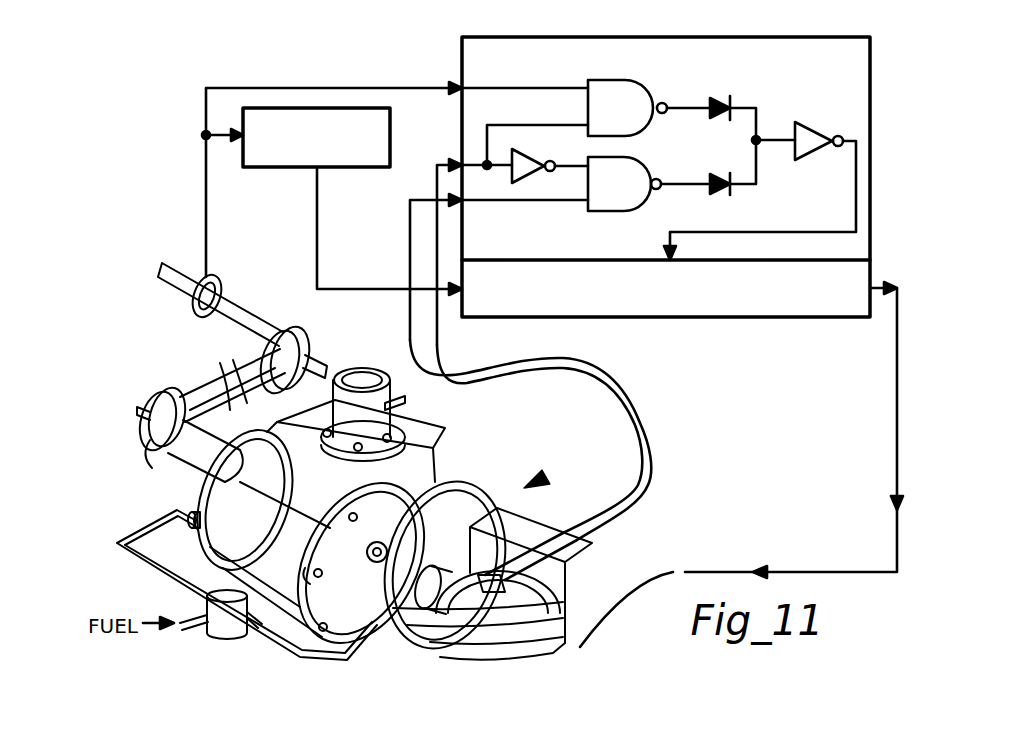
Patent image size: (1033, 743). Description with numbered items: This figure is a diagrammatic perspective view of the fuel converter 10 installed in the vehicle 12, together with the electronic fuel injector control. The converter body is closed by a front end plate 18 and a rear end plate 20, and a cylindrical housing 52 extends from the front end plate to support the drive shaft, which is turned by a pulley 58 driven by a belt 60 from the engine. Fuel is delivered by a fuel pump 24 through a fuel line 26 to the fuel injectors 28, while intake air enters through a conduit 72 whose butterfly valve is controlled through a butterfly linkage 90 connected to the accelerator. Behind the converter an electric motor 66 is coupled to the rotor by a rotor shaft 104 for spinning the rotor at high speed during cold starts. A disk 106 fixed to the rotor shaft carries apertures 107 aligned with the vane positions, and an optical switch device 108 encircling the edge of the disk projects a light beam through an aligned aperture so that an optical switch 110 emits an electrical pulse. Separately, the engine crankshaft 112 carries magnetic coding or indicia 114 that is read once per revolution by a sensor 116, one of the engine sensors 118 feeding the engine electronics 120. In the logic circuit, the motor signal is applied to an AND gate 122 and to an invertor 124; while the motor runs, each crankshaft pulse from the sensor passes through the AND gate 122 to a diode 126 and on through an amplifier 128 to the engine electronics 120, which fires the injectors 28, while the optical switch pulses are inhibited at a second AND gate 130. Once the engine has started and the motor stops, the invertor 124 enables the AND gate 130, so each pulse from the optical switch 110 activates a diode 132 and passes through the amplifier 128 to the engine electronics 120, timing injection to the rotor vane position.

The fuel converter 10 is at (150, 480).
The vehicle 12 is at (450, 493).
The front end plate 18 is at (200, 548).
The rear end plate 20 is at (365, 507).
The fuel pump 24 is at (207, 600).
The fuel line 26 is at (150, 519).
The fuel injectors 28 is at (200, 520).
The cylindrical housing 52 is at (210, 448).
The pulley 58 is at (160, 460).
The belt 60 is at (303, 327).
The electric motor 66 is at (567, 560).
The conduit 72 is at (392, 418).
The butterfly linkage 90 is at (392, 405).
The rotor shaft 104 is at (433, 487).
The disk 106 is at (565, 590).
The apertures 107 is at (487, 543).
The optical switch device 108 is at (573, 640).
The optical switch 110 is at (537, 479).
The engine crankshaft 112 is at (160, 288).
The magnetic coding or indicia 114 is at (197, 313).
The sensor 116 is at (216, 275).
The engine sensors 118 is at (297, 167).
The engine electronics 120 is at (790, 305).
The AND gate 122 is at (640, 124).
The invertor 124 is at (530, 188).
The diode 126 is at (728, 97).
The amplifier 128 is at (800, 122).
The AND gate 130 is at (622, 210).
The diode 132 is at (730, 192).